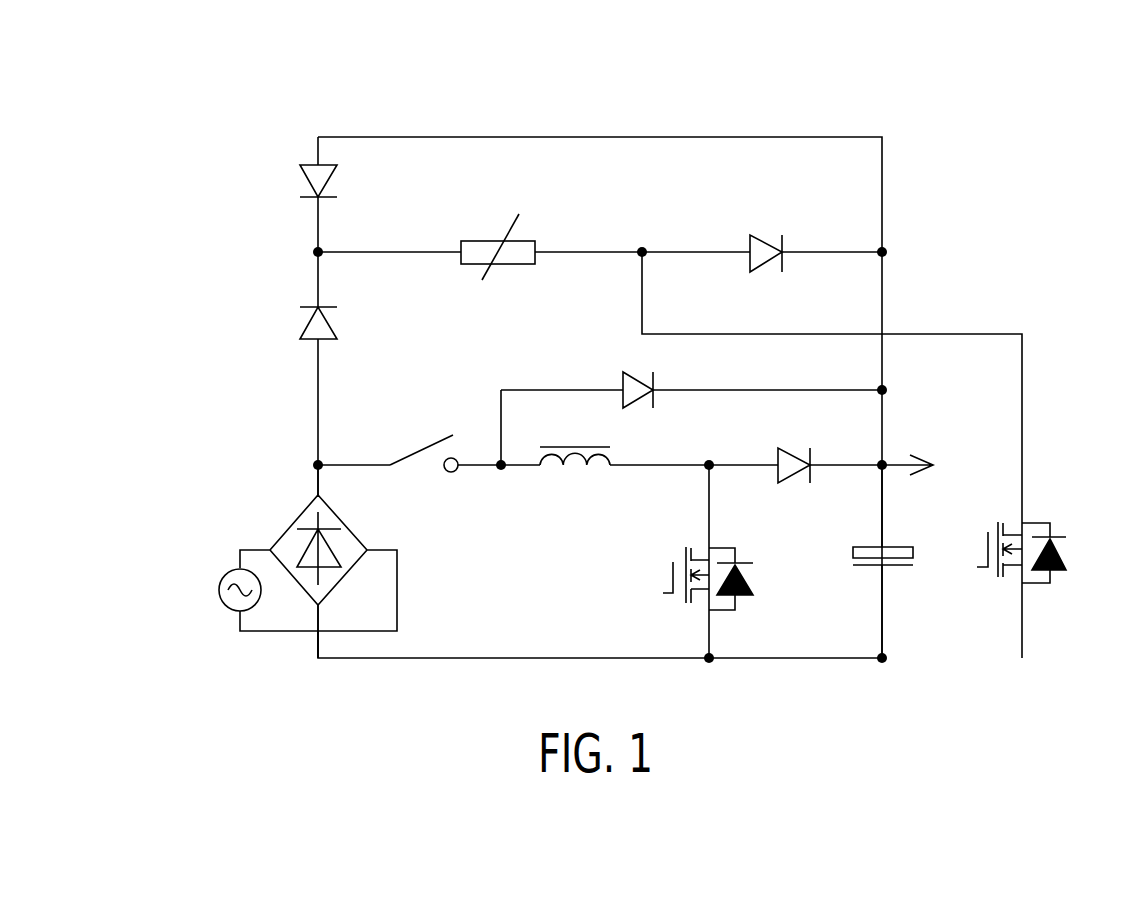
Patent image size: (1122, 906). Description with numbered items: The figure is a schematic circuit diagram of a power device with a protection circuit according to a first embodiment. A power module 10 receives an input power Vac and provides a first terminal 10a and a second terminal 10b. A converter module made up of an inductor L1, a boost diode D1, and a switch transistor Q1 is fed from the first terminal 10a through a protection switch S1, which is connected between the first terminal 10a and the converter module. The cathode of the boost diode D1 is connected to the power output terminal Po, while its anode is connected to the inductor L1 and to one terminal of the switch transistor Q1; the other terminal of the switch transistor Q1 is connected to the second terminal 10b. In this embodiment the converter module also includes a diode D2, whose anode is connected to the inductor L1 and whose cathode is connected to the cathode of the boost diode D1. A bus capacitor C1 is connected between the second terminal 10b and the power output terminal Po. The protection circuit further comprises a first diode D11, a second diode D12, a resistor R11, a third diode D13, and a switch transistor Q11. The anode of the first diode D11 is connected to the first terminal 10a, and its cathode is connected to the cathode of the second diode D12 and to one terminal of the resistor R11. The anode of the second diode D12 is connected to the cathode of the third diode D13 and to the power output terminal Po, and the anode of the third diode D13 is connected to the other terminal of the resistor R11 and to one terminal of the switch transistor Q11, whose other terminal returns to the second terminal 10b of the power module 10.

The power module 10 is at (240, 515).
The first terminal 10a is at (290, 490).
The second terminal 10b is at (295, 652).
The input power Vac is at (214, 590).
The first diode D11 is at (292, 325).
The second diode D12 is at (292, 186).
The third diode D13 is at (773, 235).
The resistor R11 is at (519, 243).
The protection switch S1 is at (424, 467).
The inductor L1 is at (575, 477).
The boost diode D1 is at (795, 485).
The diode D2 is at (663, 403).
The switch transistor Q1 is at (691, 561).
The switch transistor Q11 is at (1045, 552).
The bus capacitor C1 is at (879, 561).
The power output terminal Po is at (930, 464).